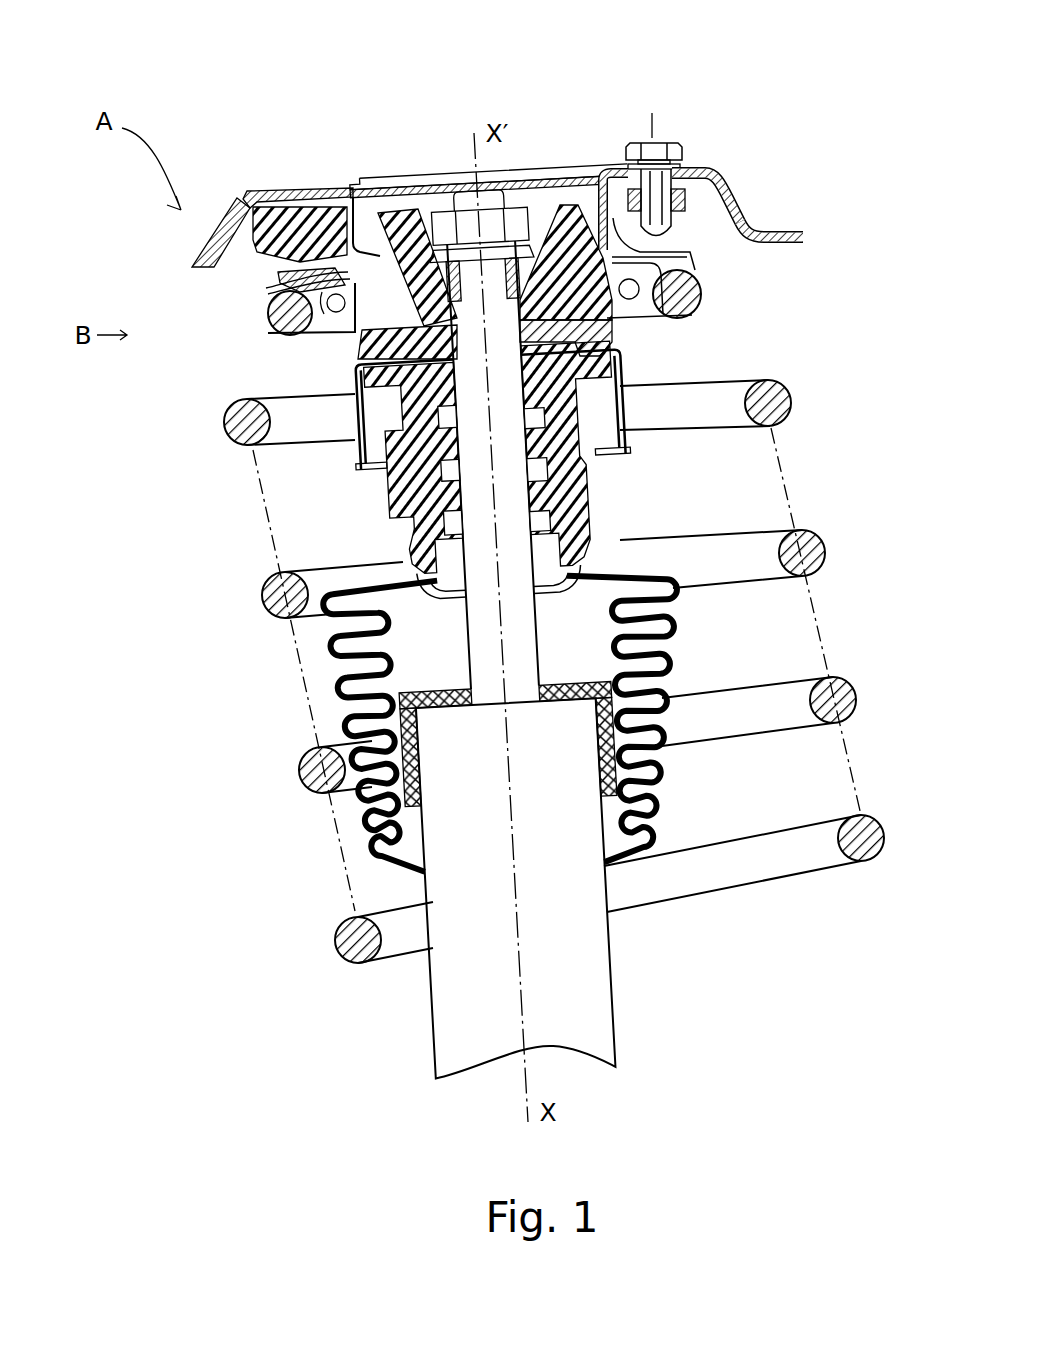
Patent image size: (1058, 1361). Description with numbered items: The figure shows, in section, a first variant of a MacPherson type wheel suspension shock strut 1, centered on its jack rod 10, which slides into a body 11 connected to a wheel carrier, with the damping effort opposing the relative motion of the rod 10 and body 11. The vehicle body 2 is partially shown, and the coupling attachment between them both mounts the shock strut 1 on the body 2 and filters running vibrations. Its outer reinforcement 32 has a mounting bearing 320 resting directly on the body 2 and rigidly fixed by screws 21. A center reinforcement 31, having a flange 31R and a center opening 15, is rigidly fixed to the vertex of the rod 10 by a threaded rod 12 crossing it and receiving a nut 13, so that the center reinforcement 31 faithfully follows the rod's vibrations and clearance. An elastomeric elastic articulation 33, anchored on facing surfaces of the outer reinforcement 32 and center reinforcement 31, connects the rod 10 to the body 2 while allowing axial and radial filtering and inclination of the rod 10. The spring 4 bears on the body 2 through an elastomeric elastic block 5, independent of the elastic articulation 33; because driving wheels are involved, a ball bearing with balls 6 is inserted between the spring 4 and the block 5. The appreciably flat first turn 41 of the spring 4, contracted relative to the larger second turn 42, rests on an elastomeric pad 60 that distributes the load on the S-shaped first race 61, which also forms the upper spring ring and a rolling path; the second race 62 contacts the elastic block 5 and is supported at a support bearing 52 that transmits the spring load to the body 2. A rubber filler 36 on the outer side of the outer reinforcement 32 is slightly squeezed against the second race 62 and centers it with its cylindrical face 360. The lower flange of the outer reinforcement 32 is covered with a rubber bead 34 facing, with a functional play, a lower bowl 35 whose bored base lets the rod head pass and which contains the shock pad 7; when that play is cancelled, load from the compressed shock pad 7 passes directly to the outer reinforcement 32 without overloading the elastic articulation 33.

The shock strut 1 is at (377, 1005).
The body 2 is at (757, 222).
The spring 4 is at (826, 537).
The elastic block 5 is at (236, 226).
The balls 6 is at (345, 340).
The shock pad 7 is at (390, 514).
The jack rod 10 is at (530, 667).
The body 11 is at (595, 1018).
The threaded rod 12 is at (489, 250).
The nut 13 is at (425, 225).
The center opening 15 is at (472, 205).
The screws 21 is at (677, 143).
The center reinforcement 31 is at (420, 232).
The flange 31R is at (565, 205).
The outer reinforcement 32 is at (373, 196).
The elastic articulation 33 is at (587, 167).
The rubber bead 34 is at (640, 358).
The lower bowl 35 is at (620, 433).
The filler 36 is at (358, 332).
The first turn 41 is at (690, 305).
The second turn 42 is at (793, 398).
The support bearing 52 is at (660, 322).
The pad 60 is at (690, 266).
The first race 61 is at (268, 288).
The second race 62 is at (272, 258).
The mounting bearing 320 is at (283, 191).
The cylindrical face 360 is at (648, 236).